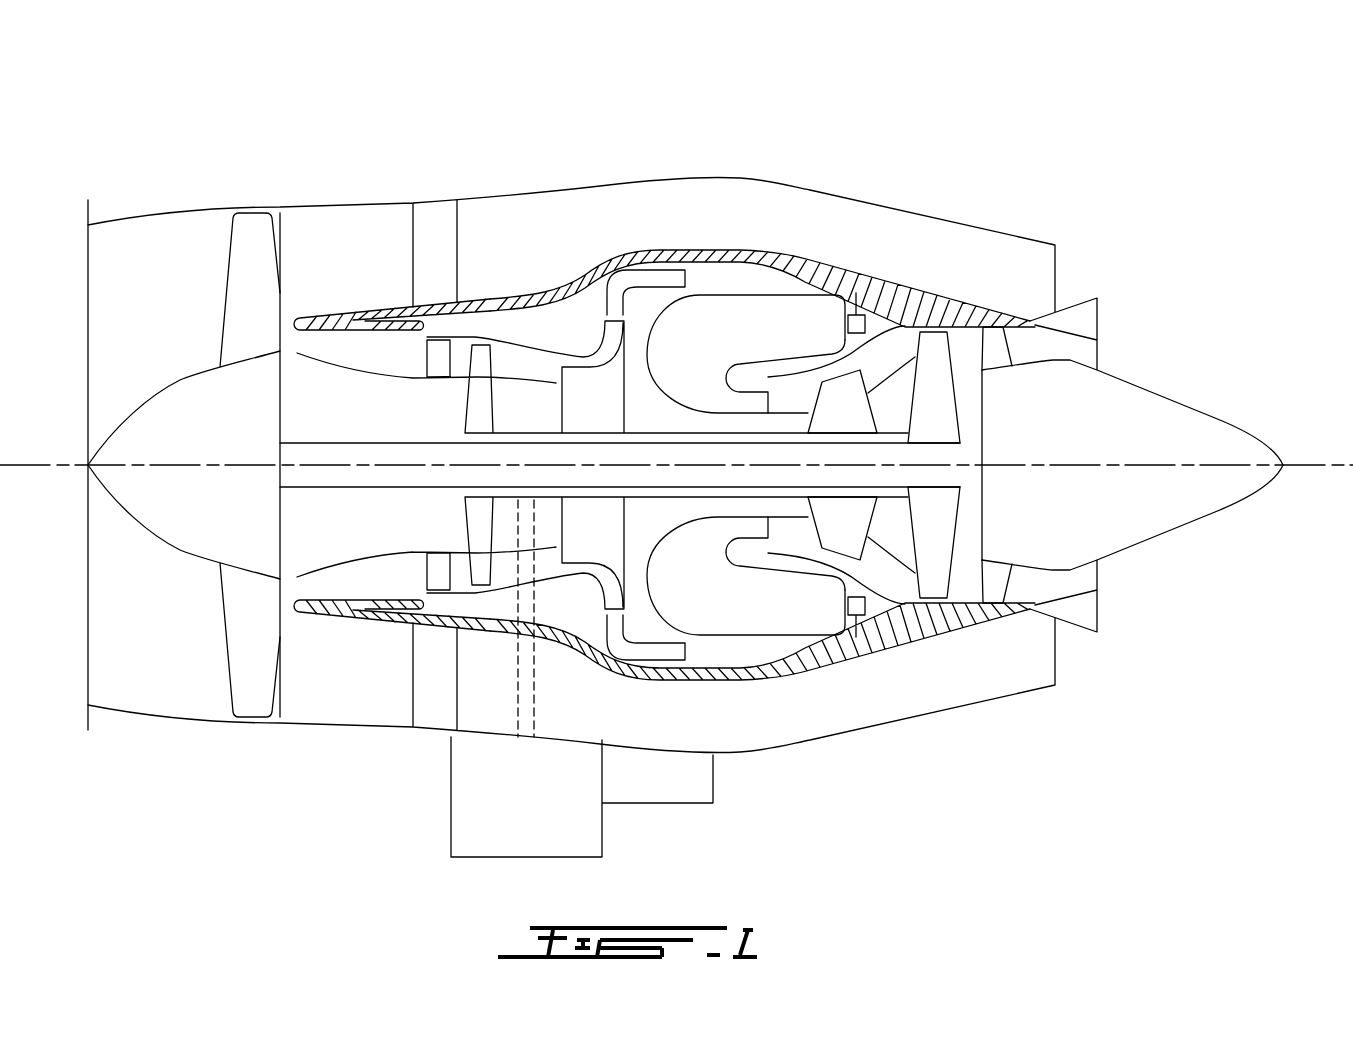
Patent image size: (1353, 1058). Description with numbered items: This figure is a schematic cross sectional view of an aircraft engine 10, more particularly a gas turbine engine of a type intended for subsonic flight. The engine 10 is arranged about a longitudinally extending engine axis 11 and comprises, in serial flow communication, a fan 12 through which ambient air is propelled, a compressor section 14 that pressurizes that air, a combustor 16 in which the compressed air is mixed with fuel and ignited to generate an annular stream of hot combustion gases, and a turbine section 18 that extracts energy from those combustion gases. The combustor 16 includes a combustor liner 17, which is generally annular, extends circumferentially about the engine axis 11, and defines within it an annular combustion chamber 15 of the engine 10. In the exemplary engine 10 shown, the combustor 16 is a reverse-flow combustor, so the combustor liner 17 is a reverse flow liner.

The aircraft engine 10 is at (969, 155).
The engine axis 11 is at (1323, 465).
The fan 12 is at (245, 630).
The compressor section 14 is at (517, 360).
The annular combustion chamber 15 is at (702, 362).
The combustor 16 is at (752, 278).
The combustor liner 17 is at (807, 291).
The turbine section 18 is at (888, 537).